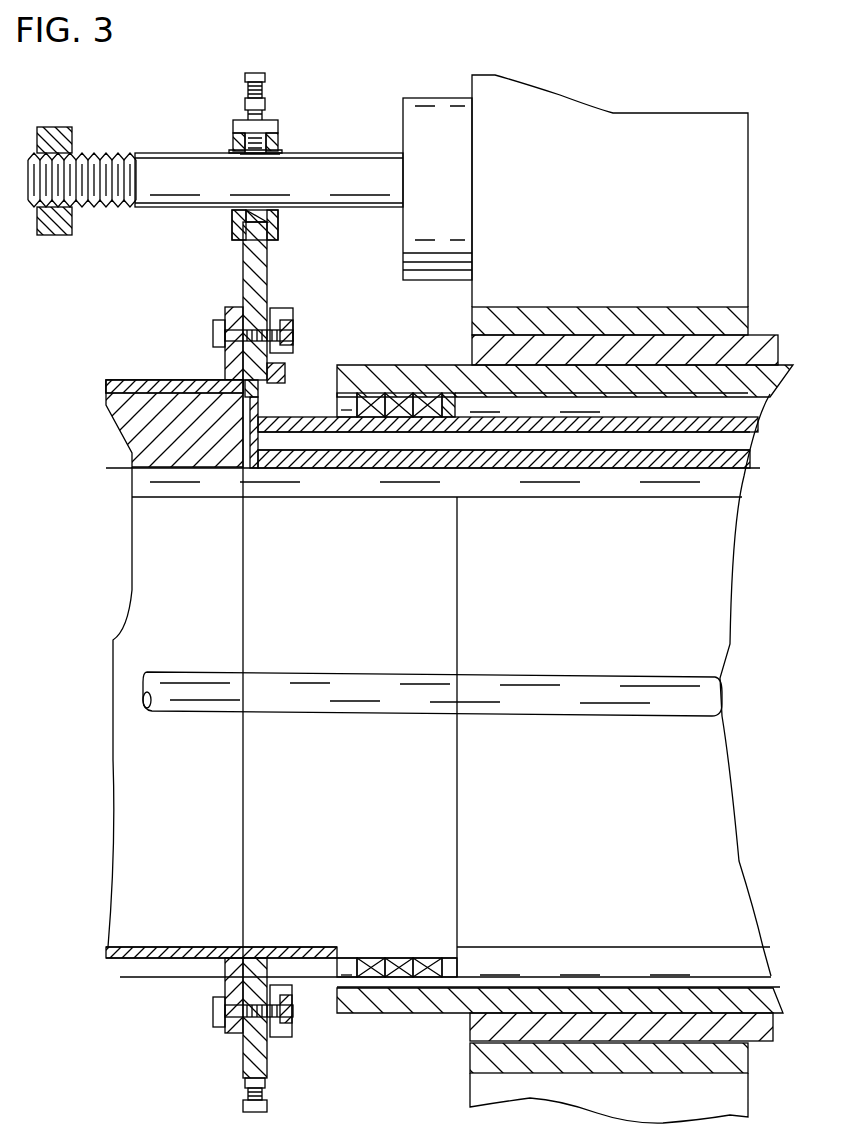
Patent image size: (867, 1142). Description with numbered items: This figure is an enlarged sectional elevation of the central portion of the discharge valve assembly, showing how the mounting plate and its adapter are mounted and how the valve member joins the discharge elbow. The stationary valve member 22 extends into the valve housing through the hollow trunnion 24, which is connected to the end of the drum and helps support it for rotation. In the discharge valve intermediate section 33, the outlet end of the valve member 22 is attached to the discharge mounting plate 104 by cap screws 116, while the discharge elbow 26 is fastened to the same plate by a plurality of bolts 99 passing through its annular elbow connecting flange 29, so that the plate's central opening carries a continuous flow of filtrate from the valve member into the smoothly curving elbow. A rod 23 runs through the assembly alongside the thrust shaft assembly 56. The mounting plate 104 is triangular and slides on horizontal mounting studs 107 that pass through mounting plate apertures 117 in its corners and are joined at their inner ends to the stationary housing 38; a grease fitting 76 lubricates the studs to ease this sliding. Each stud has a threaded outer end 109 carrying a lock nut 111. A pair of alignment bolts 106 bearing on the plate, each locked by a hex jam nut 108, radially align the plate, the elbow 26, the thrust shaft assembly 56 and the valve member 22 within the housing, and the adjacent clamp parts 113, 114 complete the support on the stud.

The stationary valve member 22 is at (302, 412).
The rod 23 is at (243, 548).
The hollow trunnion 24 is at (590, 560).
The discharge elbow 26 is at (135, 380).
The elbow connecting flange 29 is at (227, 308).
The discharge valve intermediate section 33 is at (763, 365).
The stationary housing 38 is at (431, 108).
The thrust shaft assembly 56 is at (390, 673).
The grease fitting 76 is at (282, 220).
The bolts 99 is at (215, 326).
The discharge mounting plate 104 is at (247, 258).
The alignment bolts 106 is at (253, 73).
The mounting studs 107 is at (358, 165).
The hex jam nut 108 is at (245, 104).
The threaded outer end 109 is at (80, 154).
The lock nut 111 is at (50, 127).
The clamp lower part 113 is at (272, 153).
The clamp upper part 114 is at (270, 120).
The mounting plate bushing 116 is at (293, 326).
The mounting plate apertures 117 is at (266, 157).